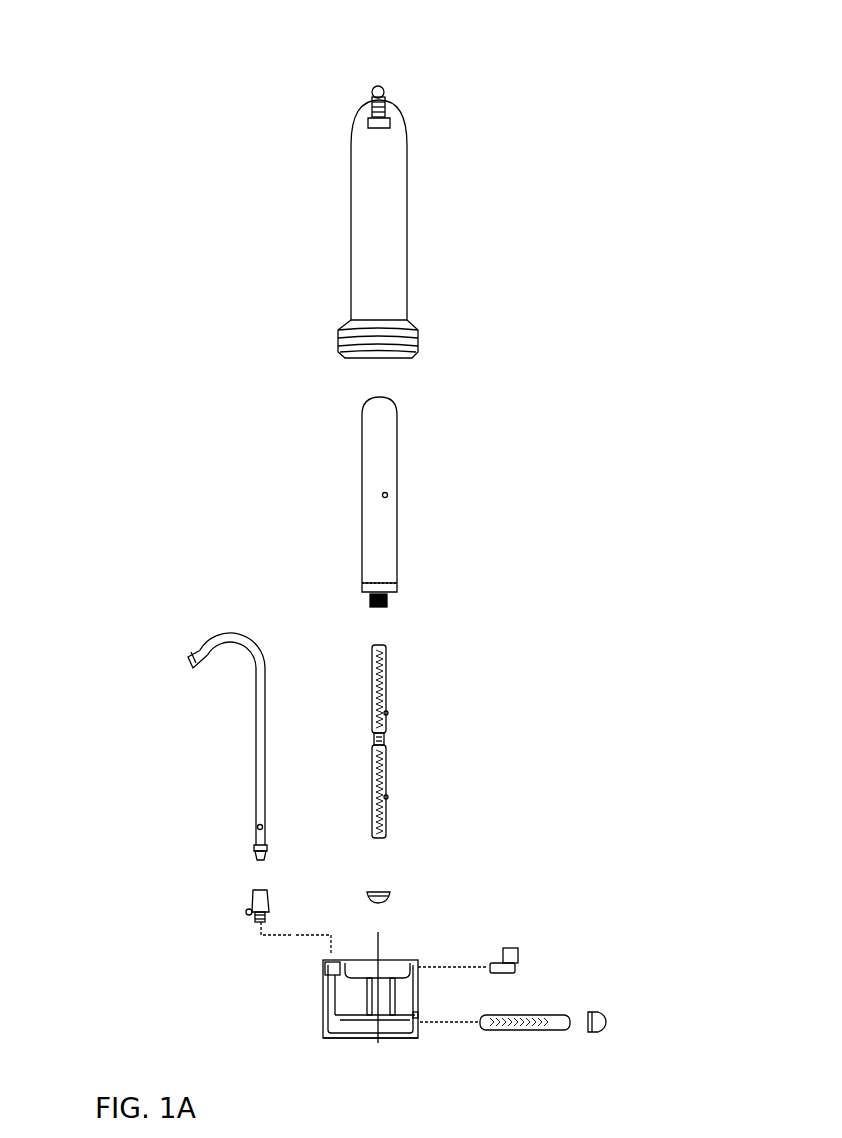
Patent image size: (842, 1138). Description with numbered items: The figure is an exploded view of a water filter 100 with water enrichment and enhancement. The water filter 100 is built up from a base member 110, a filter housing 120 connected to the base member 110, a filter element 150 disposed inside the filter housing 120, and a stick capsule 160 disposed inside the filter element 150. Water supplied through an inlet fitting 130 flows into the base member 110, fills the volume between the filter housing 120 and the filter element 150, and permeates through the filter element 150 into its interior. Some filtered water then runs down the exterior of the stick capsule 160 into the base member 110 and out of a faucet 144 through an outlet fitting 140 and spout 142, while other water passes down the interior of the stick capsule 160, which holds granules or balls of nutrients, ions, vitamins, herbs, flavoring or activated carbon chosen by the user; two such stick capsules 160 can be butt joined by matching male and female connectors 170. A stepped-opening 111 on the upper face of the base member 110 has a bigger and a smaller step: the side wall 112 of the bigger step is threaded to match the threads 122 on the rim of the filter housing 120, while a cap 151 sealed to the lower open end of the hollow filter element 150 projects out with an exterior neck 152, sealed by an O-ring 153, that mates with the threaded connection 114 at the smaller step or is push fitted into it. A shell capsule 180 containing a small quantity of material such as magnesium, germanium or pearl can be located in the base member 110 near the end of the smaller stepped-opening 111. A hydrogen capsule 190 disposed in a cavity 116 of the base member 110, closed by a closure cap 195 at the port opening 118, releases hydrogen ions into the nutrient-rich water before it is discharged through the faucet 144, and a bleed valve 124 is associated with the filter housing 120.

The water filter 100 is at (666, 104).
The base member 110 is at (347, 990).
The stepped-opening 111 is at (362, 950).
The side wall 112 is at (415, 968).
The threaded connection 114 is at (395, 990).
The cavity 116 is at (388, 1023).
The port opening 118 is at (418, 1028).
The filter housing 120 is at (409, 250).
The threads 122 is at (400, 346).
The bleed valve 124 is at (385, 96).
The inlet fitting 130 is at (515, 965).
The outlet fitting 140 is at (247, 912).
The spout 142 is at (257, 827).
The faucet 144 is at (190, 667).
The filter element 150 is at (388, 495).
The cap 151 is at (388, 588).
The neck 152 is at (388, 598).
The O-ring 153 is at (371, 596).
The stick capsule 160 is at (388, 713).
The male and female connectors 170 is at (385, 735).
The shell capsule 180 is at (390, 893).
The hydrogen capsule 190 is at (527, 1030).
The closure cap 195 is at (607, 1024).